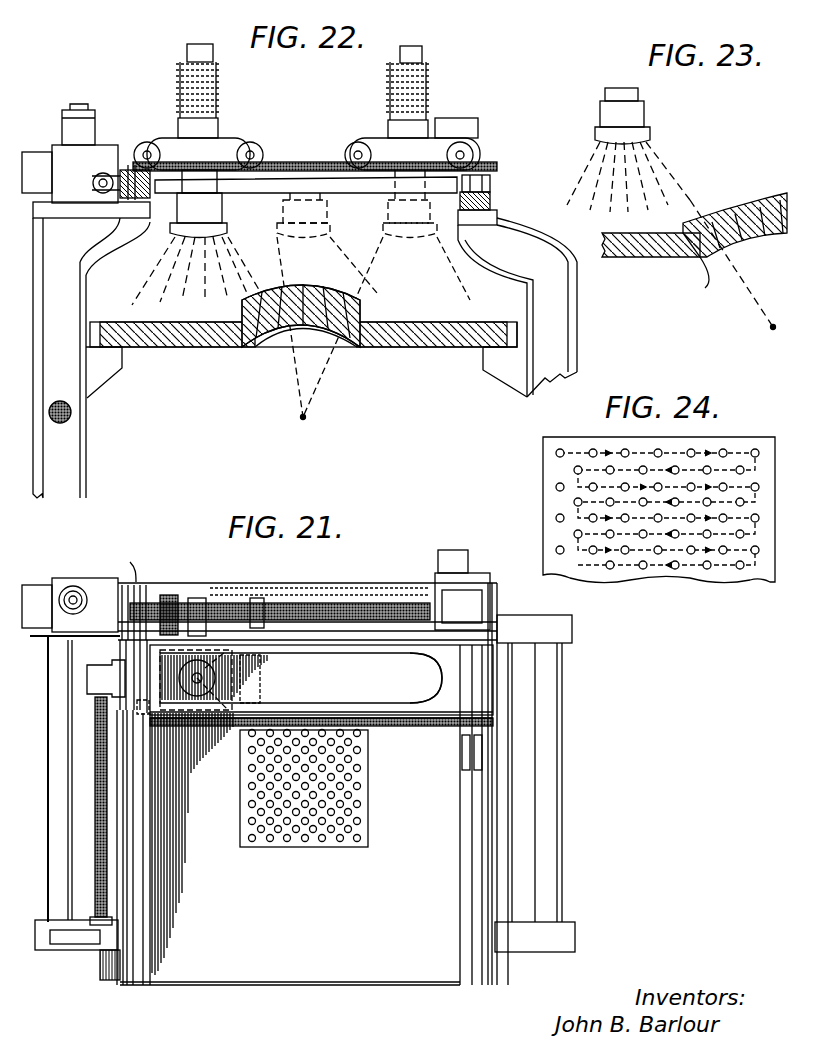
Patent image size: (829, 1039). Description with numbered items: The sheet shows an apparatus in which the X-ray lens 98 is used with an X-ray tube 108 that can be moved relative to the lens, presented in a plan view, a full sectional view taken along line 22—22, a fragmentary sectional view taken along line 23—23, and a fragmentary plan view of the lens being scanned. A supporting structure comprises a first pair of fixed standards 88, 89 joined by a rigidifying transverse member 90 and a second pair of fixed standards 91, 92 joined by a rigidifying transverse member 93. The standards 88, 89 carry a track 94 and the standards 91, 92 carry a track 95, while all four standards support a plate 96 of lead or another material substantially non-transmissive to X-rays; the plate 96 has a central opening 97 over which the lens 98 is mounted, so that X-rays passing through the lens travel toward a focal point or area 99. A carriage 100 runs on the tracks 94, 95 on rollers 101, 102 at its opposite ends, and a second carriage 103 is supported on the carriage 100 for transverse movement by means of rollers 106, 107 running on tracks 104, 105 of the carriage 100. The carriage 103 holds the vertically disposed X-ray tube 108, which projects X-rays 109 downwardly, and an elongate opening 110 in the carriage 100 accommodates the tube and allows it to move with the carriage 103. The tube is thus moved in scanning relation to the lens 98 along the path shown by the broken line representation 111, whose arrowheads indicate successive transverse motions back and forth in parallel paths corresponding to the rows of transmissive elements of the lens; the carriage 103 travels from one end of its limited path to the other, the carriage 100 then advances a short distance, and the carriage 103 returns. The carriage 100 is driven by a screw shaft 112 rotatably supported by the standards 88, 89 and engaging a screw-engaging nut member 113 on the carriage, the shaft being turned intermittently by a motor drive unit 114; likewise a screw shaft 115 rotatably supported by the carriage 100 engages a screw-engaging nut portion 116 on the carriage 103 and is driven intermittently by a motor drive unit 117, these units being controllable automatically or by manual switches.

In FIG. 22, the fixed standard 88 is at (85, 457).
In FIG. 21, the fixed standard 88 is at (37, 637).
In FIG. 21, the fixed standard 89 is at (45, 950).
In FIG. 22, the rigidifying transverse member 90 is at (72, 412).
In FIG. 21, the rigidifying transverse member 90 is at (55, 870).
In FIG. 22, the fixed standard 91 is at (568, 318).
In FIG. 21, the fixed standard 91 is at (572, 622).
In FIG. 21, the fixed standard 92 is at (575, 937).
In FIG. 21, the rigidifying transverse member 93 is at (562, 862).
In FIG. 22, the track 94 is at (130, 214).
In FIG. 21, the track 94 is at (148, 897).
In FIG. 22, the track 95 is at (486, 204).
In FIG. 21, the track 95 is at (460, 890).
In FIG. 22, the plate 96 is at (185, 348).
In FIG. 23, the plate 96 is at (640, 257).
In FIG. 21, the plate 96 is at (296, 985).
In FIG. 22, the central opening 97 is at (345, 350).
In FIG. 23, the central opening 97 is at (708, 283).
In FIG. 22, the X-ray lens 98 is at (366, 300).
In FIG. 23, the X-ray lens 98 is at (758, 192).
In FIG. 24, the X-ray lens 98 is at (556, 486).
In FIG. 21, the X-ray lens 98 is at (318, 848).
In FIG. 22, the focal point or area 99 is at (305, 417).
In FIG. 23, the focal point or area 99 is at (771, 329).
In FIG. 22, the carriage 100 is at (296, 164).
In FIG. 21, the carriage 100 is at (412, 693).
In FIG. 22, the roller 101 is at (134, 170).
In FIG. 21, the roller 101 is at (196, 788).
In FIG. 22, the roller 102 is at (486, 175).
In FIG. 21, the roller 102 is at (470, 758).
In FIG. 22, the second carriage 103 is at (228, 138).
In FIG. 21, the second carriage 103 is at (160, 672).
In FIG. 22, the track 104 is at (332, 163).
In FIG. 21, the track 104 is at (410, 728).
In FIG. 21, the track 105 is at (380, 640).
In FIG. 22, the roller 106 is at (148, 140).
In FIG. 21, the roller 106 is at (292, 690).
In FIG. 21, the roller 107 is at (178, 592).
In FIG. 22, the X-ray tube 108 is at (212, 206).
In FIG. 23, the X-ray tube 108 is at (640, 106).
In FIG. 22, the X-rays 109 is at (155, 262).
In FIG. 23, the X-rays 109 is at (637, 180).
In FIG. 21, the elongate opening 110 is at (430, 660).
In FIG. 24, the broken line representation 111 is at (744, 448).
In FIG. 22, the screw shaft 112 is at (93, 189).
In FIG. 21, the screw shaft 112 is at (95, 710).
In FIG. 22, the screw-engaging nut member 113 is at (97, 175).
In FIG. 21, the screw-engaging nut member 113 is at (88, 682).
In FIG. 22, the motor drive unit 114 is at (63, 130).
In FIG. 21, the motor drive unit 114 is at (70, 578).
In FIG. 21, the screw shaft 115 is at (322, 605).
In FIG. 21, the screw-engaging nut portion 116 is at (205, 596).
In FIG. 22, the motor drive unit 117 is at (462, 122).
In FIG. 21, the motor drive unit 117 is at (470, 580).
In FIG. 21, the section line 22— 22 is at (25, 745).
In FIG. 21, the section line 23— 23 is at (326, 778).